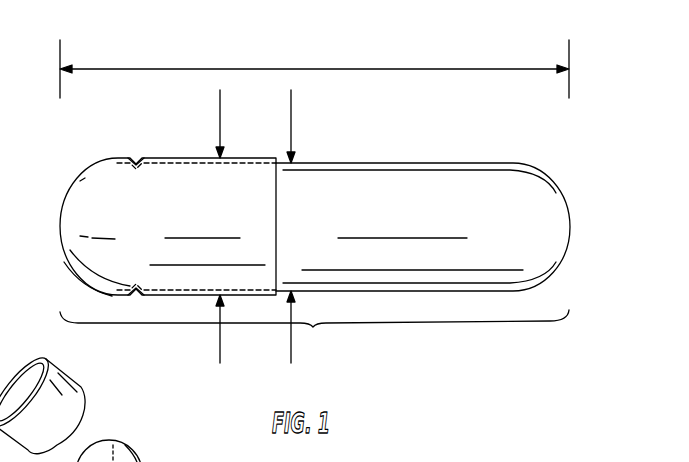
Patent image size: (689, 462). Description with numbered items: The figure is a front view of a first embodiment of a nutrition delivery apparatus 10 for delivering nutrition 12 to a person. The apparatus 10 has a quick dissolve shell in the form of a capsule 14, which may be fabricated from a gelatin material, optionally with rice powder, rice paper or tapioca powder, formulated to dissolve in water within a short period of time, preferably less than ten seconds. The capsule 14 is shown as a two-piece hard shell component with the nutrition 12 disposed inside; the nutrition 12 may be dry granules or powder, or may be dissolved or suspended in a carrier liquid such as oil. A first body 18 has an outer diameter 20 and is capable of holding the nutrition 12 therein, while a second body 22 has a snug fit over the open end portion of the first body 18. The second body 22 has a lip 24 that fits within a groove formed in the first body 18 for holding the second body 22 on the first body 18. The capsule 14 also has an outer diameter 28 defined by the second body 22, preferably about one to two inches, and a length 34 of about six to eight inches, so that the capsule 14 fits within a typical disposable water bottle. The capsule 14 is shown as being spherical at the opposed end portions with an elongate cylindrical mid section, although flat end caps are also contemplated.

The nutrition delivery apparatus 10 is at (315, 190).
The nutrition 12 is at (418, 192).
The capsule 14 is at (360, 198).
The first body 18 is at (314, 335).
The outer diameter 20 is at (288, 343).
The second body 22 is at (169, 200).
The lip 24 is at (107, 215).
The outer diameter 28 is at (220, 117).
The length 34 is at (370, 69).